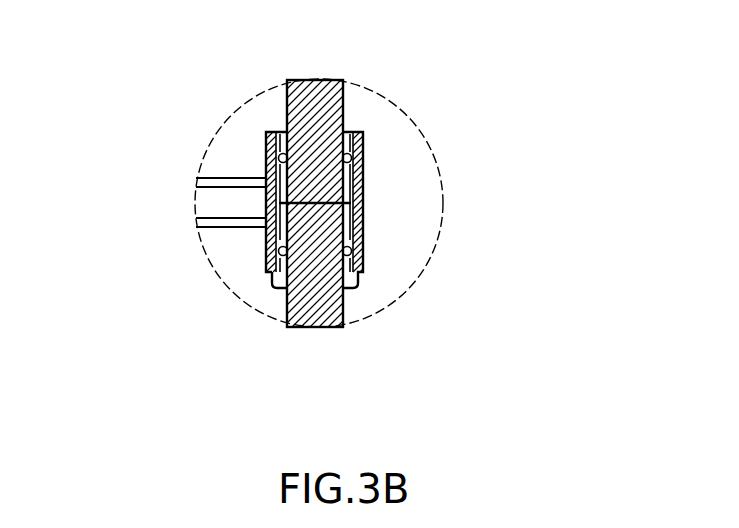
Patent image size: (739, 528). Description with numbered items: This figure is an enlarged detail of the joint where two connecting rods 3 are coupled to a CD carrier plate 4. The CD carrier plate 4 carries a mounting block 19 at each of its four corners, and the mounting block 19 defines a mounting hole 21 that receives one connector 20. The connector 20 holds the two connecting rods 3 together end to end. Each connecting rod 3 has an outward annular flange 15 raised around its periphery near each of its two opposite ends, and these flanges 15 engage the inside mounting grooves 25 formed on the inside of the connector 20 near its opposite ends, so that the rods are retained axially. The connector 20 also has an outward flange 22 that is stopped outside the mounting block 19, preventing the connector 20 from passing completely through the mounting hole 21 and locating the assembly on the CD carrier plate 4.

The connecting rod 3 is at (342, 120).
The CD carrier plate 4 is at (233, 200).
The outward annular flange 15 is at (277, 252).
The mounting block 19 is at (363, 223).
The connector 20 is at (348, 132).
The mounting hole 21 is at (363, 248).
The outward flange 22 is at (278, 280).
The inside mounting groove 25 is at (366, 160).